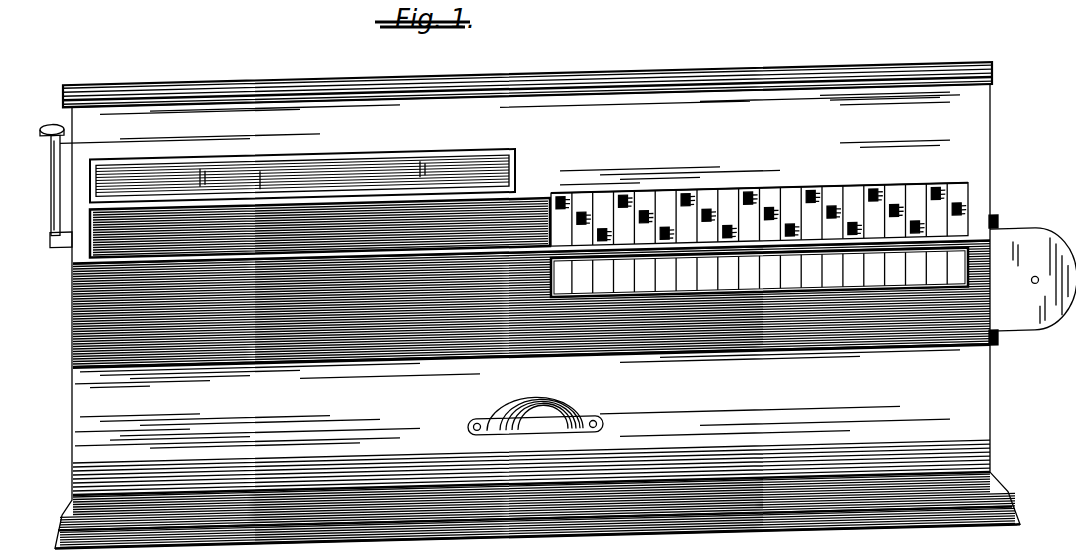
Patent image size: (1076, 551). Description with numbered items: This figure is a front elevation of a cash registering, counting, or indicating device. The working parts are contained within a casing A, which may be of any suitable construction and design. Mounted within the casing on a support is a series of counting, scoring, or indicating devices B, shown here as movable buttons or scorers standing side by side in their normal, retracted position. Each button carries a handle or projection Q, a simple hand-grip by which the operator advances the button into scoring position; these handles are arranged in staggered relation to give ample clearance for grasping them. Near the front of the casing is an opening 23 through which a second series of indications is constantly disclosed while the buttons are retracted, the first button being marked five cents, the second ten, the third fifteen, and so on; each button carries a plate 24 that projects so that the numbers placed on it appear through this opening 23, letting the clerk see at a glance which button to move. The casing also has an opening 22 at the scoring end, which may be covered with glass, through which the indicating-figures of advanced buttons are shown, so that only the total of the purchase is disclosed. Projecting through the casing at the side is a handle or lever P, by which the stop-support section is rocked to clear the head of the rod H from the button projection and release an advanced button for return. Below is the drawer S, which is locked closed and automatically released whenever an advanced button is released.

The casing A is at (990, 122).
The rod H is at (72, 355).
The handle or lever P is at (52, 172).
The drawer S is at (785, 425).
The opening 22 is at (262, 176).
The counting, scoring, or indicating devices B is at (759, 215).
The handle or projection Q is at (630, 217).
The opening 23 is at (786, 292).
The plate 24 is at (572, 297).